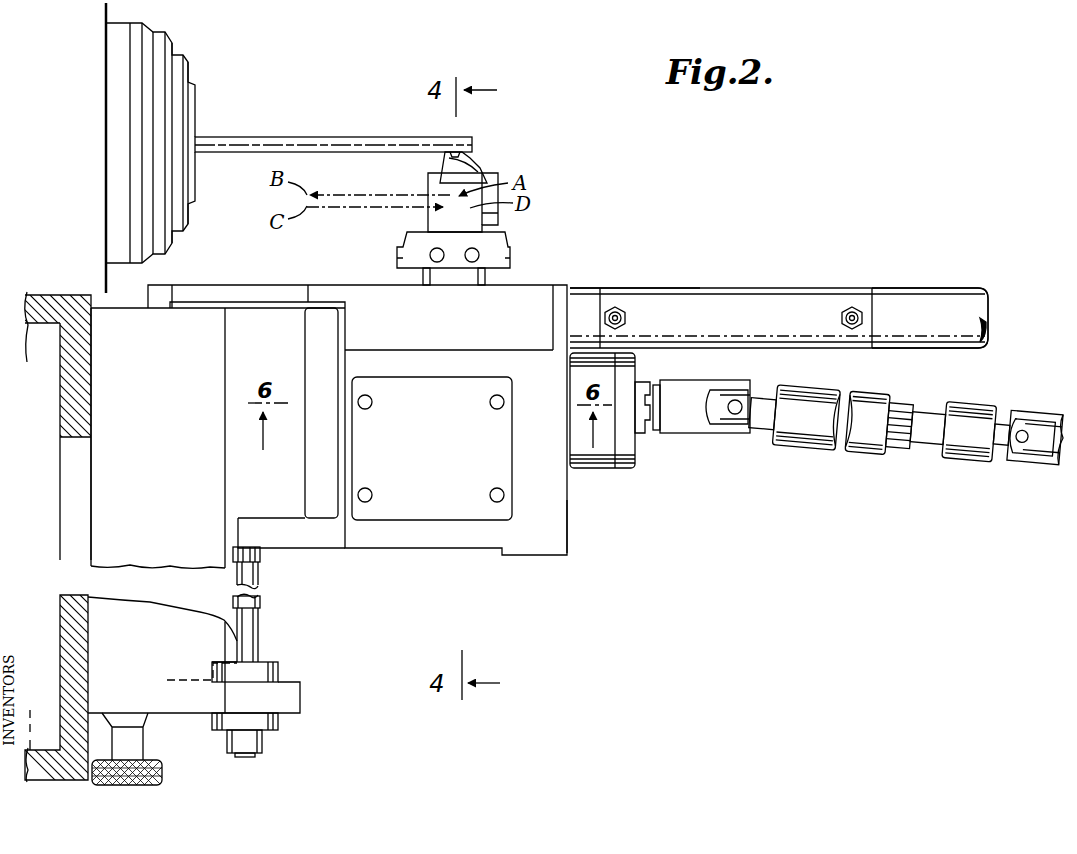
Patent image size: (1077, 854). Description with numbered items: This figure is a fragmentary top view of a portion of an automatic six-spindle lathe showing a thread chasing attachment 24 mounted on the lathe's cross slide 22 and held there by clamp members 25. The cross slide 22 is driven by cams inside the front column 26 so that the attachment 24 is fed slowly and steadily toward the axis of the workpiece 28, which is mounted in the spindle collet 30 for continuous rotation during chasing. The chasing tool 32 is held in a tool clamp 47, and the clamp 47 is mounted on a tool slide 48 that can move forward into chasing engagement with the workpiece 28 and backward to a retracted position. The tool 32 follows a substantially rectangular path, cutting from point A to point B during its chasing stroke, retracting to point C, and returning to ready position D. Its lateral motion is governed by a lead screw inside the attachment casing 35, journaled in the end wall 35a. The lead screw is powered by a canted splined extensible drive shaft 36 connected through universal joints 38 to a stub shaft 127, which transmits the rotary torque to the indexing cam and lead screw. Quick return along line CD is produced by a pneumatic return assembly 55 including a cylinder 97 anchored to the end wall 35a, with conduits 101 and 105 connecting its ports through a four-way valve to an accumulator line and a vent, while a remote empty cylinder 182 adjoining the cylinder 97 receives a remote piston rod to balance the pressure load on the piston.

The cross slide 22 is at (136, 490).
The thread chasing attachment 24 is at (558, 564).
The clamp members 25 is at (320, 505).
The front column 26 is at (56, 394).
The workpiece 28 is at (277, 137).
The spindle collet 30 is at (201, 115).
The chasing tool 32 is at (468, 168).
The attachment casing 35 is at (413, 538).
The end wall 35a is at (568, 522).
The canted splined extensible drive shaft 36 is at (795, 449).
The universal joints 38 is at (754, 428).
The tool clamp 47 is at (512, 228).
The tool slide 48 is at (487, 281).
The pneumatic return assembly 55 is at (697, 284).
The cylinder 97 is at (750, 289).
The conduit 101 is at (617, 306).
The conduit 105 is at (852, 306).
The stub shaft 127 is at (661, 412).
The remote empty cylinder 182 is at (907, 290).